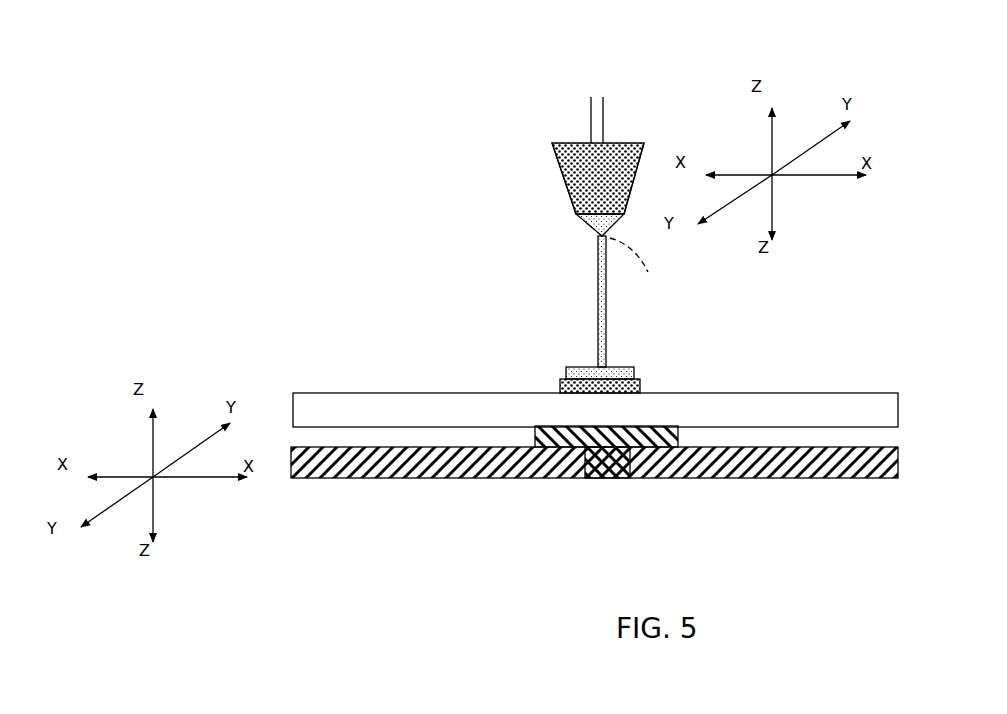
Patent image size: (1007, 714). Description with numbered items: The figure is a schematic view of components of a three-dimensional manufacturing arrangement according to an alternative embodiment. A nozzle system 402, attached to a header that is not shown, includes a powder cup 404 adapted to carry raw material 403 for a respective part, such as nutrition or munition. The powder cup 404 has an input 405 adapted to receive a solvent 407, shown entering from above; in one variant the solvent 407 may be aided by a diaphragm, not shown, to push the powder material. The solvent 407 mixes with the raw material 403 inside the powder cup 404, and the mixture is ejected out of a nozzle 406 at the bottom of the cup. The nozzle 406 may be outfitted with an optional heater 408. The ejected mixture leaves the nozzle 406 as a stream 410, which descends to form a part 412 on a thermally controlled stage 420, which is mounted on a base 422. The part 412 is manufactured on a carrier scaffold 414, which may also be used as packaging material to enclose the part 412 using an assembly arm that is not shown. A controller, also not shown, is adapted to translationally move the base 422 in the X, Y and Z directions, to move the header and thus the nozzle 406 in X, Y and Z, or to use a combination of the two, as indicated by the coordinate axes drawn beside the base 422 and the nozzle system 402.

The nozzle system 402 is at (540, 79).
The raw material 403 is at (615, 142).
The powder cup 404 is at (552, 143).
The input 405 is at (589, 133).
The nozzle 406 is at (620, 218).
The solvent 407 is at (596, 96).
The heater 408 is at (648, 263).
The stream 410 is at (607, 258).
The part 412 is at (644, 371).
The carrier scaffold 414 is at (640, 391).
The thermally controlled stage 420 is at (898, 393).
The base 422 is at (913, 454).